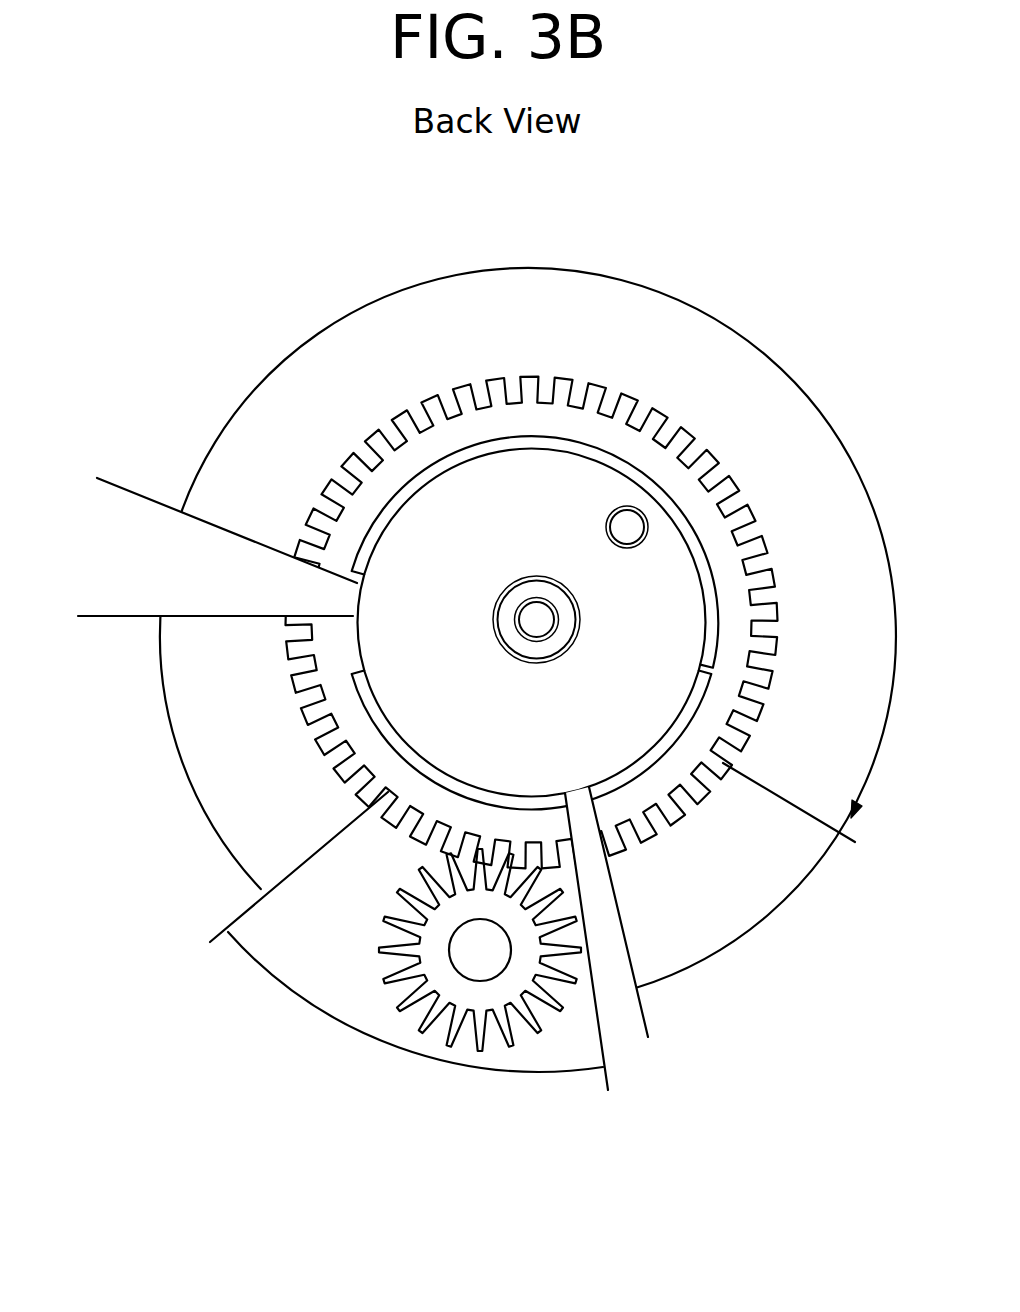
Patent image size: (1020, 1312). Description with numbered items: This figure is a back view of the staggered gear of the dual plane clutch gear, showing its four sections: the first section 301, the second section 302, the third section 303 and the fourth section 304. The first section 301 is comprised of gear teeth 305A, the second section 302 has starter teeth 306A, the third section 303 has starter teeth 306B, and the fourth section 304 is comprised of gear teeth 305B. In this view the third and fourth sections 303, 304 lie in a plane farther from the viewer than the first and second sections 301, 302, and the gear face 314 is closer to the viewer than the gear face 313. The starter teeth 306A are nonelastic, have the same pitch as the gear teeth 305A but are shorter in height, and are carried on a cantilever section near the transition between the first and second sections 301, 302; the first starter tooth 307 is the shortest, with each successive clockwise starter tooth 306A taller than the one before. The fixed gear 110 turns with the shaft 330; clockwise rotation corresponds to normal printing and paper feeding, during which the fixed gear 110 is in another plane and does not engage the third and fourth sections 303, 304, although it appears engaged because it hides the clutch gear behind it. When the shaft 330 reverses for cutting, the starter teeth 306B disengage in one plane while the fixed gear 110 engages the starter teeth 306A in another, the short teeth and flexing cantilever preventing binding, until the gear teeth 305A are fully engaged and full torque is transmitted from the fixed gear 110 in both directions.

The first section 301 is at (528, 607).
The second section 302 is at (792, 865).
The third section 303 is at (415, 1012).
The fourth section 304 is at (254, 867).
The gear teeth 305A is at (485, 602).
The gear teeth 305B is at (310, 738).
The starter teeth 306A is at (677, 820).
The starter teeth 306B is at (387, 802).
The first starter tooth 307 is at (608, 855).
The gear face 313 is at (323, 640).
The gear face 314 is at (462, 510).
The fixed gear 110 is at (393, 995).
The shaft 330 is at (476, 982).